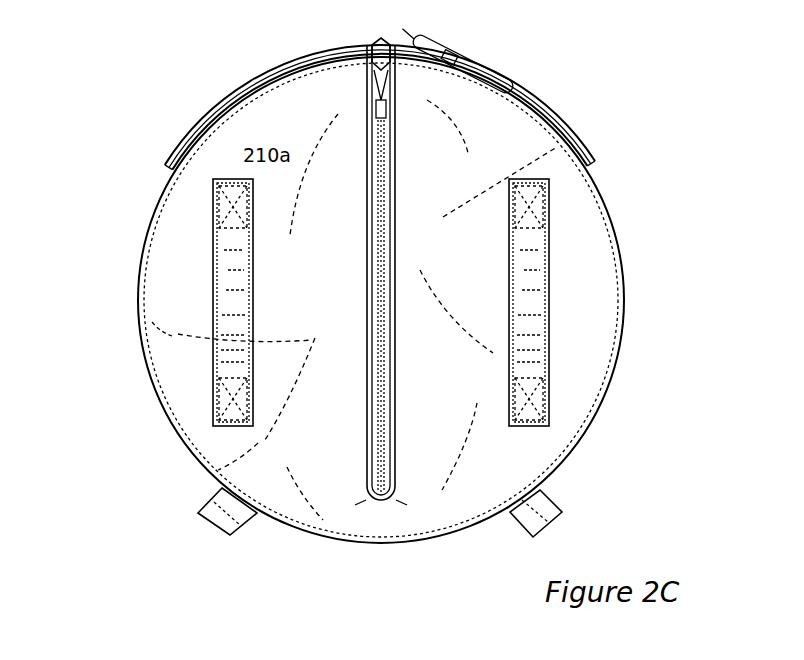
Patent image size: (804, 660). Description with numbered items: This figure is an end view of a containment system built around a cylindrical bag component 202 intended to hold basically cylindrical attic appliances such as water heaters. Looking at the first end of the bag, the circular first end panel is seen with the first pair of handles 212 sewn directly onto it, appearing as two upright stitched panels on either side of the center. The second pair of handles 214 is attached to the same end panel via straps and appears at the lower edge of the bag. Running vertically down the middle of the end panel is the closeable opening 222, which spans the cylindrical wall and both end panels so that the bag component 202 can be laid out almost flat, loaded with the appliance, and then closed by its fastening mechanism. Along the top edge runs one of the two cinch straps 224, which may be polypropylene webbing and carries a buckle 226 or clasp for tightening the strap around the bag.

The cylindrical bag component 202 is at (642, 320).
The first pair of handles 212 is at (540, 370).
The second pair of handles 214 is at (530, 535).
The closeable opening 222 is at (385, 222).
The cinch straps 224 is at (540, 100).
The buckles 226 is at (452, 50).